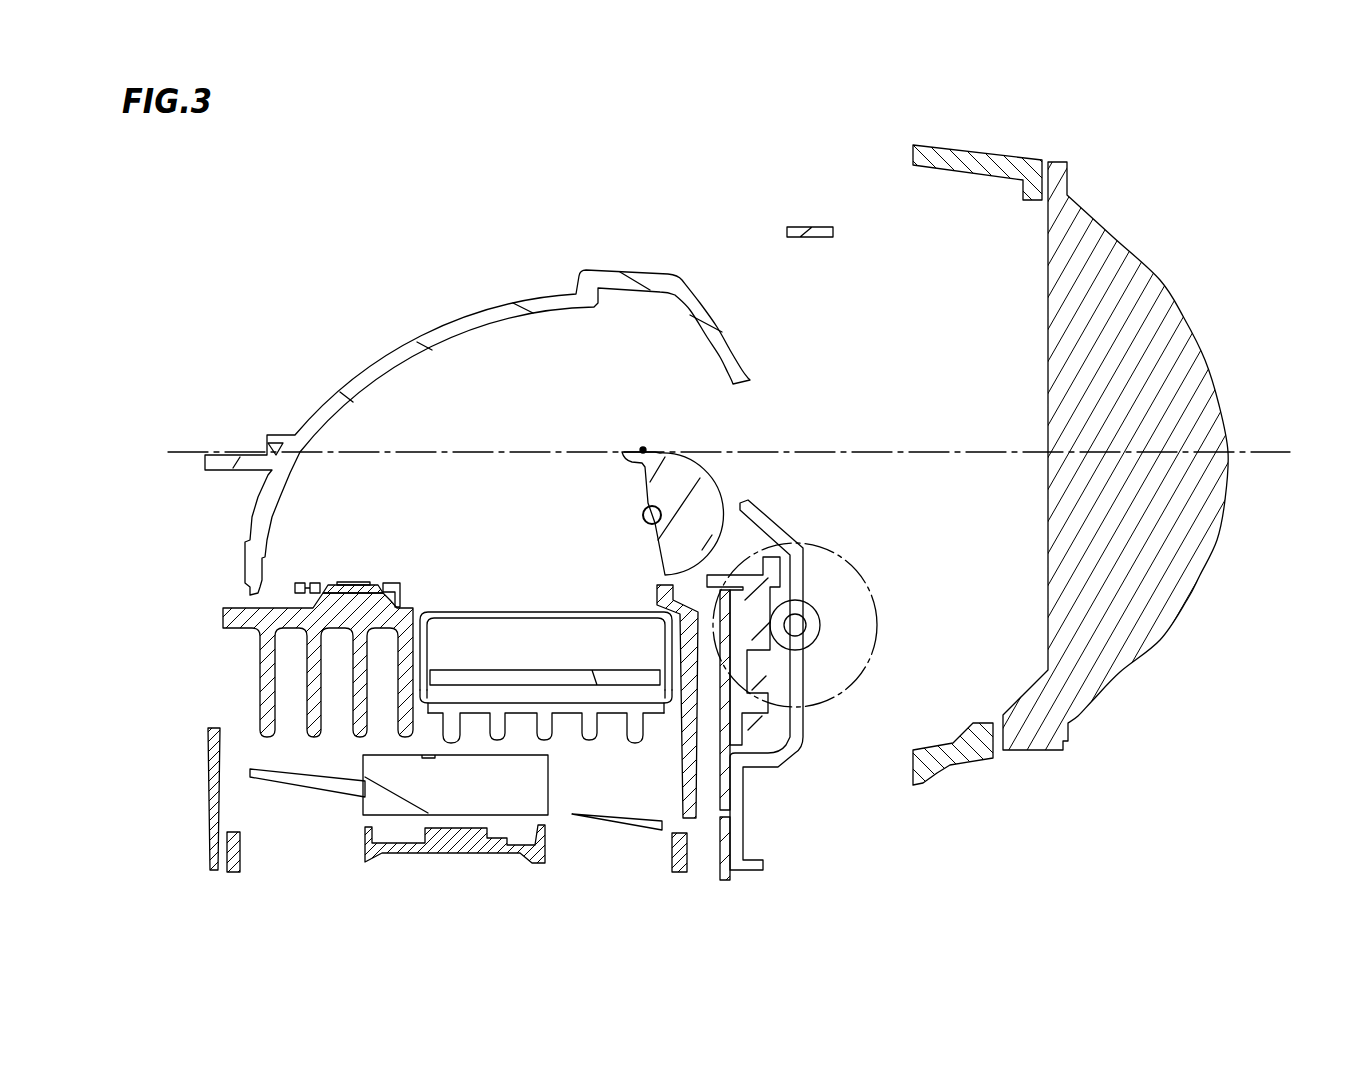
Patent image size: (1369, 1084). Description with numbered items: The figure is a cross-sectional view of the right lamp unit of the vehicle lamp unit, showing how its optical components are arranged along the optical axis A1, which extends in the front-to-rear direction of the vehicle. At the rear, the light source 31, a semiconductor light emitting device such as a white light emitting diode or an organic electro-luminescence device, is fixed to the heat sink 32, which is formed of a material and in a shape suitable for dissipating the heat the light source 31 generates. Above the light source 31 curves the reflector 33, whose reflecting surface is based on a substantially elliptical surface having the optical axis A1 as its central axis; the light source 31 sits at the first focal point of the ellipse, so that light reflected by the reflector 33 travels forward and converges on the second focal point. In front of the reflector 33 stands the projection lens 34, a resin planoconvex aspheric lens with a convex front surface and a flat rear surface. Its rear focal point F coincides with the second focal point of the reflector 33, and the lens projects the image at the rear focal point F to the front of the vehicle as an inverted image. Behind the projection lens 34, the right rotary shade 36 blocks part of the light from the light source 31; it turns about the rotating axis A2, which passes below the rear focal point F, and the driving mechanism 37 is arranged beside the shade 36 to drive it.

The light source 31 is at (368, 578).
The heat sink 32 is at (233, 607).
The reflector 33 is at (476, 307).
The projection lens 34 is at (1069, 195).
The right rotary shade 36 is at (713, 483).
The driving mechanism 37 is at (838, 708).
The rear focal point F is at (643, 447).
The optical axis A1 is at (1275, 454).
The rotating axis A2 is at (642, 512).